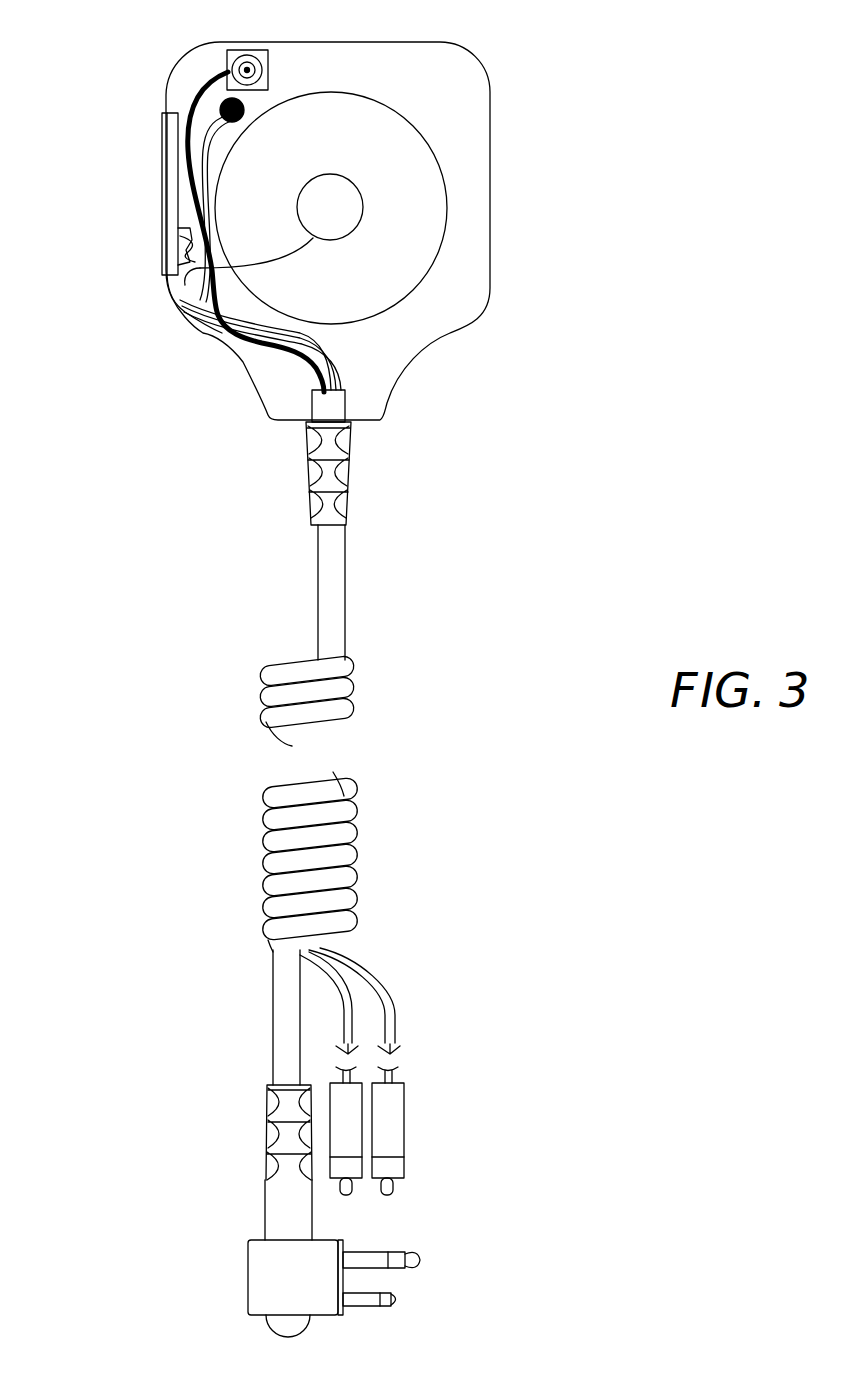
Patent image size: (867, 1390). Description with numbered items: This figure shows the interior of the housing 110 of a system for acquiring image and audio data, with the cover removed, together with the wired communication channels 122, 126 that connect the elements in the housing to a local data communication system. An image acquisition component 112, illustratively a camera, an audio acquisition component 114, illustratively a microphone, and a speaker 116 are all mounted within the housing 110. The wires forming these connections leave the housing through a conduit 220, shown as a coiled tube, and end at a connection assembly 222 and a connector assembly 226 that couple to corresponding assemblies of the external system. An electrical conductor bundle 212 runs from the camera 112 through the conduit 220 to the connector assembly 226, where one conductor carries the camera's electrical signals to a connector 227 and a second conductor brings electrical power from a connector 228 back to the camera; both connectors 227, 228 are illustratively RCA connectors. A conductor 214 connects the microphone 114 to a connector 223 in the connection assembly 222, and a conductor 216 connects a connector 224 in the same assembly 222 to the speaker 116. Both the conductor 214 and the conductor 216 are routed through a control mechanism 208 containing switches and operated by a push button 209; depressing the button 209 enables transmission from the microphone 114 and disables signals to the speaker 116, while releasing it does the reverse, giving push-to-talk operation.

The housing 110 is at (290, 42).
The image acquisition component 112 is at (250, 49).
The audio acquisition component 114 is at (221, 106).
The speaker 116 is at (355, 91).
The communication channel 122 is at (232, 1258).
The communication channel 126 is at (485, 1102).
The control mechanism 208 is at (178, 235).
The push button 209 is at (162, 172).
The electrical conductor bundle 212 is at (213, 72).
The conductor 214 is at (204, 117).
The conductor 216 is at (257, 258).
The conduit 220 is at (340, 603).
The connection assembly 222 is at (228, 1220).
The connector 223 is at (400, 1302).
The connector 224 is at (420, 1268).
The connector assembly 226 is at (445, 1054).
The connector 227 is at (395, 1190).
The connector 228 is at (350, 1190).